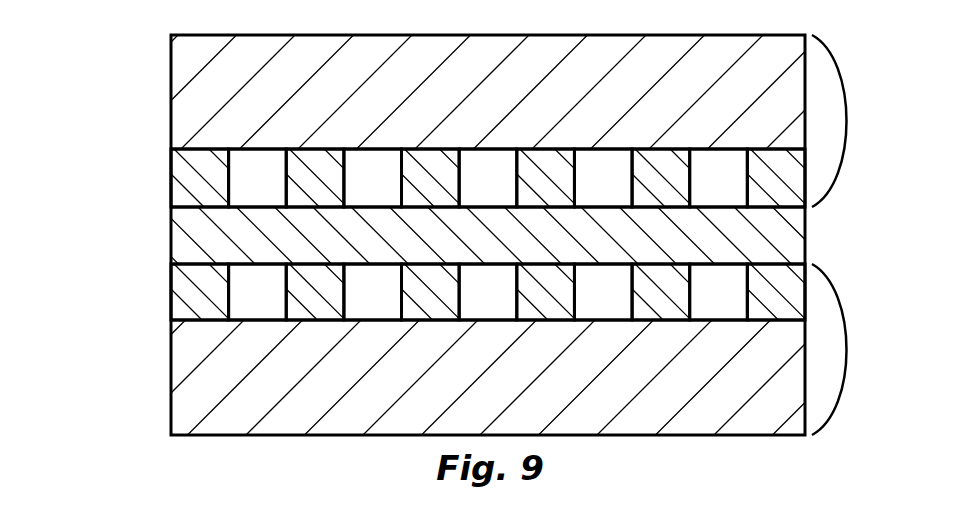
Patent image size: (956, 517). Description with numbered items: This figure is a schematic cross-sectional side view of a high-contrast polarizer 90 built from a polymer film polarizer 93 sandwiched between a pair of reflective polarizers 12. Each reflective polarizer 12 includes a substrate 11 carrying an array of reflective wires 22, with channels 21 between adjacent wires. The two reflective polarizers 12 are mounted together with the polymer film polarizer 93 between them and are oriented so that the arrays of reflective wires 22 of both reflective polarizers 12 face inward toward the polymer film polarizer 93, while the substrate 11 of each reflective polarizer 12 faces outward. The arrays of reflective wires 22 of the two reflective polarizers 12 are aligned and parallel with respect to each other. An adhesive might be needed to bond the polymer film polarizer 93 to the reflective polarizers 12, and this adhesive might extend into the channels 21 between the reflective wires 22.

The high-contrast polarizer 90 is at (72, 172).
The substrate 11 is at (503, 100).
The reflective polarizer 12 is at (871, 315).
The channel 21 is at (488, 234).
The reflective wire 22 is at (488, 234).
The polymer film polarizer 93 is at (478, 246).